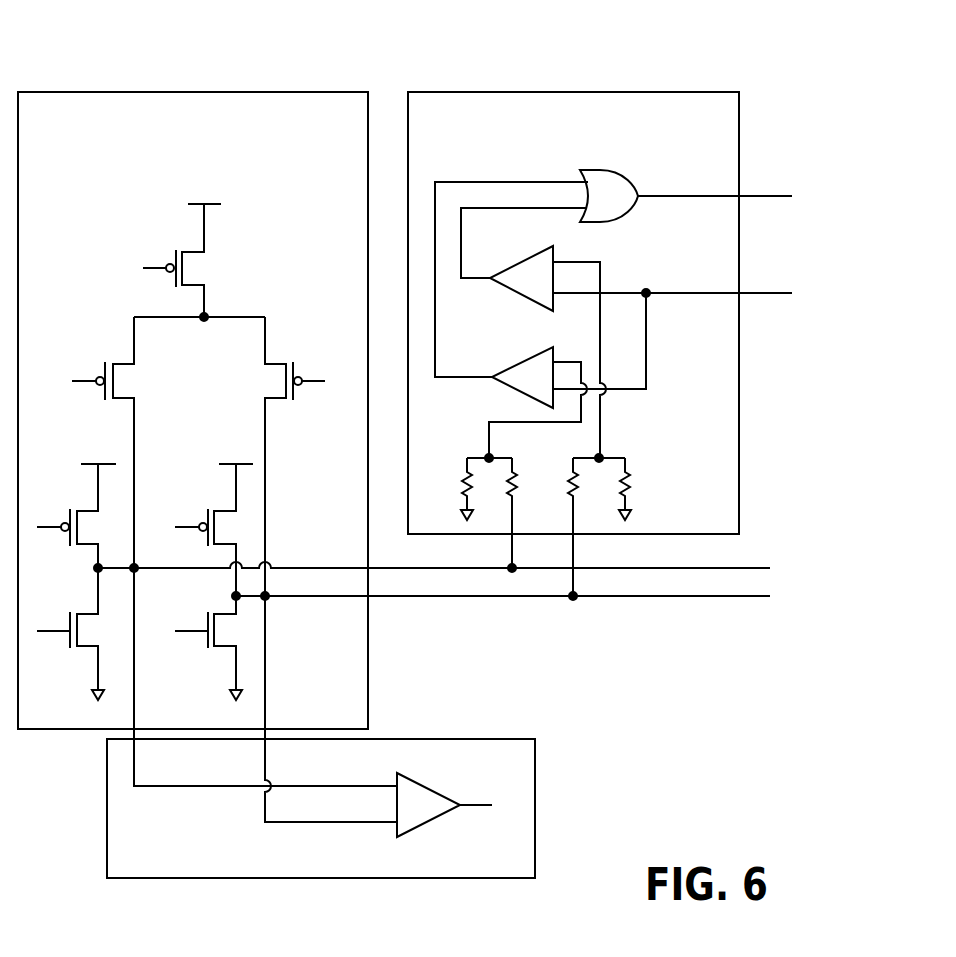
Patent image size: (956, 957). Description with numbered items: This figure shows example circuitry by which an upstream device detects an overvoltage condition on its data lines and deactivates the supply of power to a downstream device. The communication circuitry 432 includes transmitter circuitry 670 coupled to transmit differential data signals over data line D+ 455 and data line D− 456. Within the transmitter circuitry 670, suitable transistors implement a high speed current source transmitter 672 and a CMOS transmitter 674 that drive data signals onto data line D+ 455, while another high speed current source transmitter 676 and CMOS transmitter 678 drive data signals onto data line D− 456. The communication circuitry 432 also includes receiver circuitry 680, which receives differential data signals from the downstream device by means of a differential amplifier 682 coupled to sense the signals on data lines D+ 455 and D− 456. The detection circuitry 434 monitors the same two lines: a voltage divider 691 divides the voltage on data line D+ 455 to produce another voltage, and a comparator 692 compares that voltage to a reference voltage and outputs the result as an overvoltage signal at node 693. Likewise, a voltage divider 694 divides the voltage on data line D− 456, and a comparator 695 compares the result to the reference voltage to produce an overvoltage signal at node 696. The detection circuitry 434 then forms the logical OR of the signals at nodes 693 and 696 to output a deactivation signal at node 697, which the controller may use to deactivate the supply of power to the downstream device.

The communication circuitry 432 is at (77, 69).
The detection circuitry 434 is at (617, 92).
The data line D+ 455 is at (430, 572).
The data line D− 456 is at (504, 600).
The transmitter circuitry 670 is at (308, 92).
The high speed current source transmitter 672 is at (88, 293).
The CMOS transmitter 674 is at (58, 475).
The high speed current source transmitter 676 is at (268, 262).
The CMOS transmitter 678 is at (203, 466).
The receiver circuitry 680 is at (352, 878).
The differential amplifier 682 is at (433, 785).
The voltage divider 691 is at (451, 452).
The comparator 692 is at (512, 395).
The node 693 is at (435, 190).
The voltage divider 694 is at (643, 448).
The comparator 695 is at (514, 300).
The node 696 is at (462, 260).
The node 697 is at (695, 198).